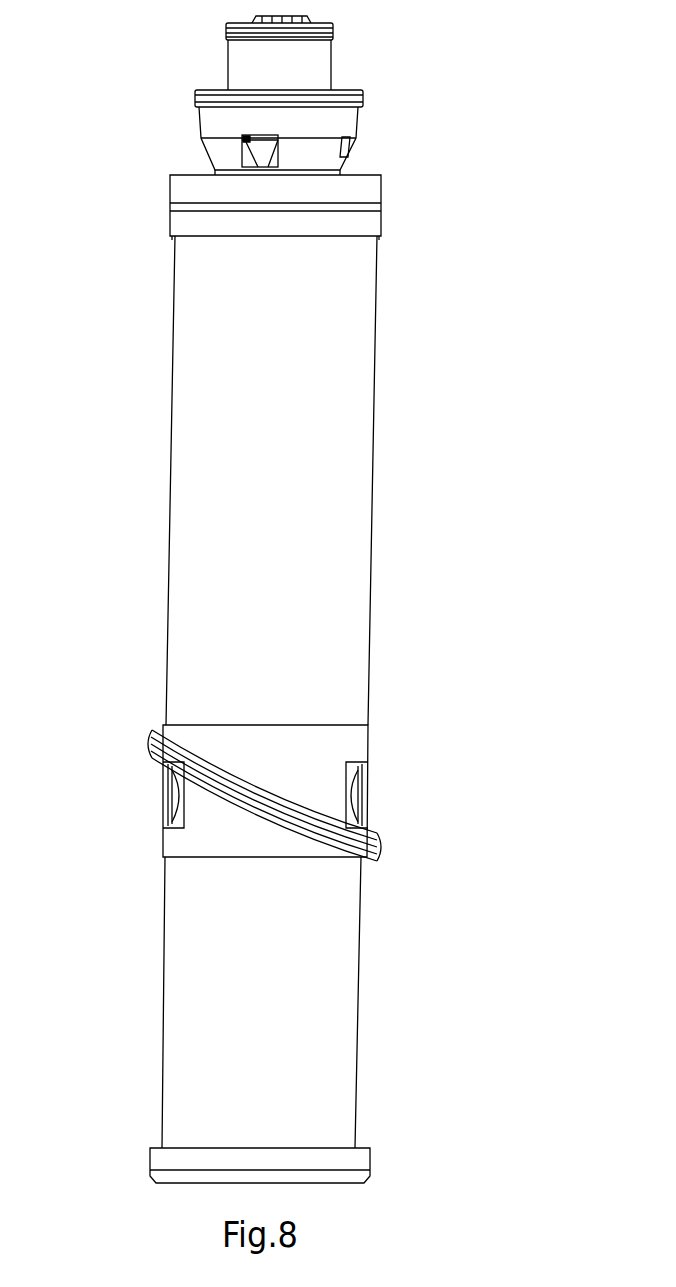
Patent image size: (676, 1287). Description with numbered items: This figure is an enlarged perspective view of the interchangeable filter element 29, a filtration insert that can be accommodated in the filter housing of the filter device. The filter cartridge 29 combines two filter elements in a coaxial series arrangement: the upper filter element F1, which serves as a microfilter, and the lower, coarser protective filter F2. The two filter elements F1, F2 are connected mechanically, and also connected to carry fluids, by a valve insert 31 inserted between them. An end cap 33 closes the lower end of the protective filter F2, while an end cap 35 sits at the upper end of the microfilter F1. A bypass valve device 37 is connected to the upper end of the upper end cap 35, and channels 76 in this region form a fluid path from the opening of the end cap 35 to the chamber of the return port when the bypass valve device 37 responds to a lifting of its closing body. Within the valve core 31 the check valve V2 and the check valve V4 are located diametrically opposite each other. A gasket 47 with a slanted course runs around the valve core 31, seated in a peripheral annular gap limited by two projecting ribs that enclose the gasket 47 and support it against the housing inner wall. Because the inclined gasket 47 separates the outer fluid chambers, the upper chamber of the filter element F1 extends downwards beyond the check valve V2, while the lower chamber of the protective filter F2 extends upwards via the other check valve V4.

The filter element 29 is at (413, 555).
The bypass valve device 37 is at (220, 120).
The channels 76 is at (260, 150).
The end cap 35 is at (367, 222).
The filter element F1 is at (192, 452).
The valve insert 31 is at (343, 750).
The check valve V4 is at (157, 790).
The check valve V2 is at (405, 805).
The gasket 47 is at (243, 795).
The protective filter F2 is at (183, 1022).
The end cap 33 is at (358, 1158).